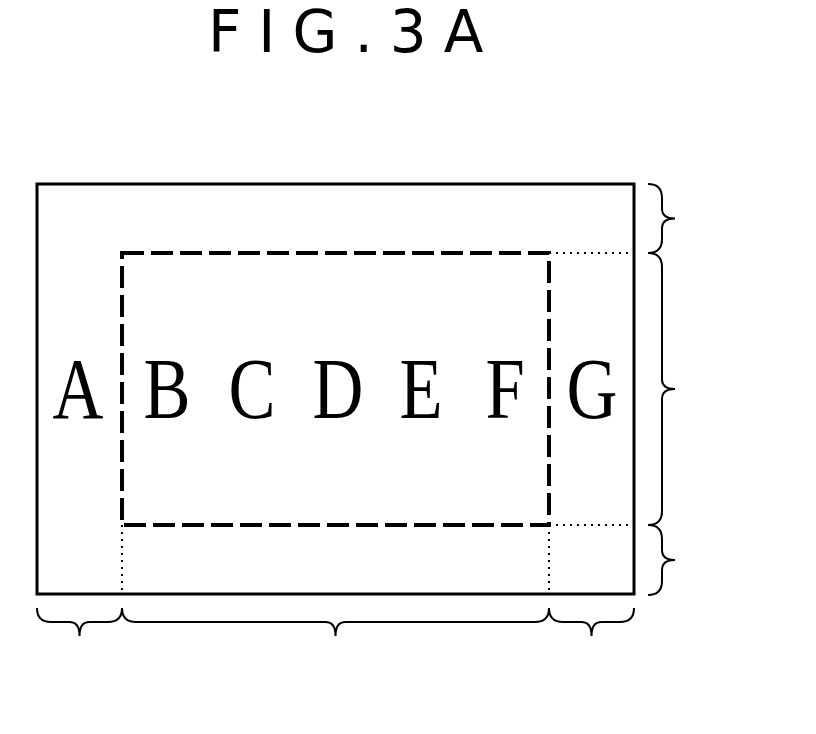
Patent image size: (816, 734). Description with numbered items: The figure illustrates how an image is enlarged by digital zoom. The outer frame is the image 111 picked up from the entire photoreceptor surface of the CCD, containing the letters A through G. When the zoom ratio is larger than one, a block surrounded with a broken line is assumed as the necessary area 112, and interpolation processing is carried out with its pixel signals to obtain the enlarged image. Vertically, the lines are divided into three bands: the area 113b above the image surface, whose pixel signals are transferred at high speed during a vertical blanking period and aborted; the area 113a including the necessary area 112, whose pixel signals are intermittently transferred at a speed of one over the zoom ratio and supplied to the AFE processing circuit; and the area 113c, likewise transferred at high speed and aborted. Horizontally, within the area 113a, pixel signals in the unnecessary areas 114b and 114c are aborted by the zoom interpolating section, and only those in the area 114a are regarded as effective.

The image 111 is at (176, 183).
The necessary area 112 is at (424, 252).
The area 113a is at (651, 389).
The area 113b is at (652, 218).
The area 113c is at (650, 560).
The area 114a is at (335, 599).
The unnecessary area 114b is at (79, 599).
The unnecessary area 114c is at (591, 600).